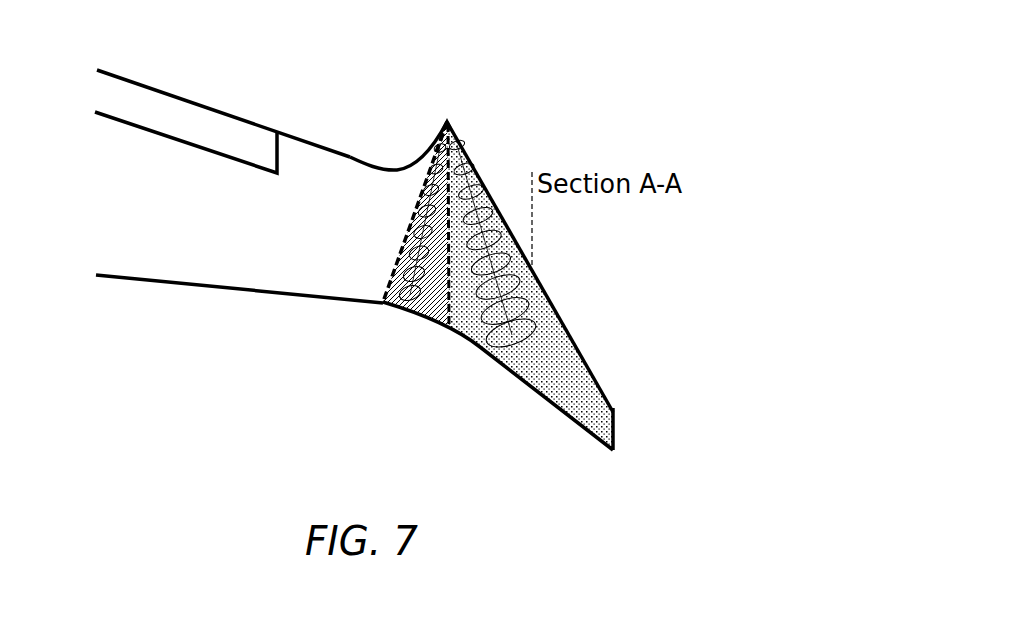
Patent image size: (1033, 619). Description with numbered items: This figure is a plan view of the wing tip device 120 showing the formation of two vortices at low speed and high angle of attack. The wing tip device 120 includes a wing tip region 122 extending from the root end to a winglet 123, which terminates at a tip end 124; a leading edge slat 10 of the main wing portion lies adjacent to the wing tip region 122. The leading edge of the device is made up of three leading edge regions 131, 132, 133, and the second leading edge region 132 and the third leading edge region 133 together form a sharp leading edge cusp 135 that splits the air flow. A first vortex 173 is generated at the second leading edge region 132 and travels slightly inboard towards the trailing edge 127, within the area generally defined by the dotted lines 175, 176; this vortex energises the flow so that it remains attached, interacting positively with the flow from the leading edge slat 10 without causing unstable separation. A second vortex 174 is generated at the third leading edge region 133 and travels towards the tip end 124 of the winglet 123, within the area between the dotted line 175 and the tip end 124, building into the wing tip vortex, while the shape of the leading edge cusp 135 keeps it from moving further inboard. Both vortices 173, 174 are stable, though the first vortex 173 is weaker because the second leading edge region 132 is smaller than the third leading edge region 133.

The leading edge slat 10 is at (174, 117).
The wing tip device 120 is at (584, 95).
The wing tip region 122 is at (348, 265).
The winglet 123 is at (547, 342).
The tip end 124 is at (615, 423).
The trailing edge 127 is at (430, 315).
The first leading edge region 131 is at (362, 160).
The second leading edge region 132 is at (440, 135).
The third leading edge region 133 is at (463, 147).
The leading edge cusp 135 is at (449, 120).
The first vortex 173 is at (415, 306).
The second vortex 174 is at (497, 353).
The dotted line 175 is at (448, 322).
The dotted line 176 is at (398, 253).